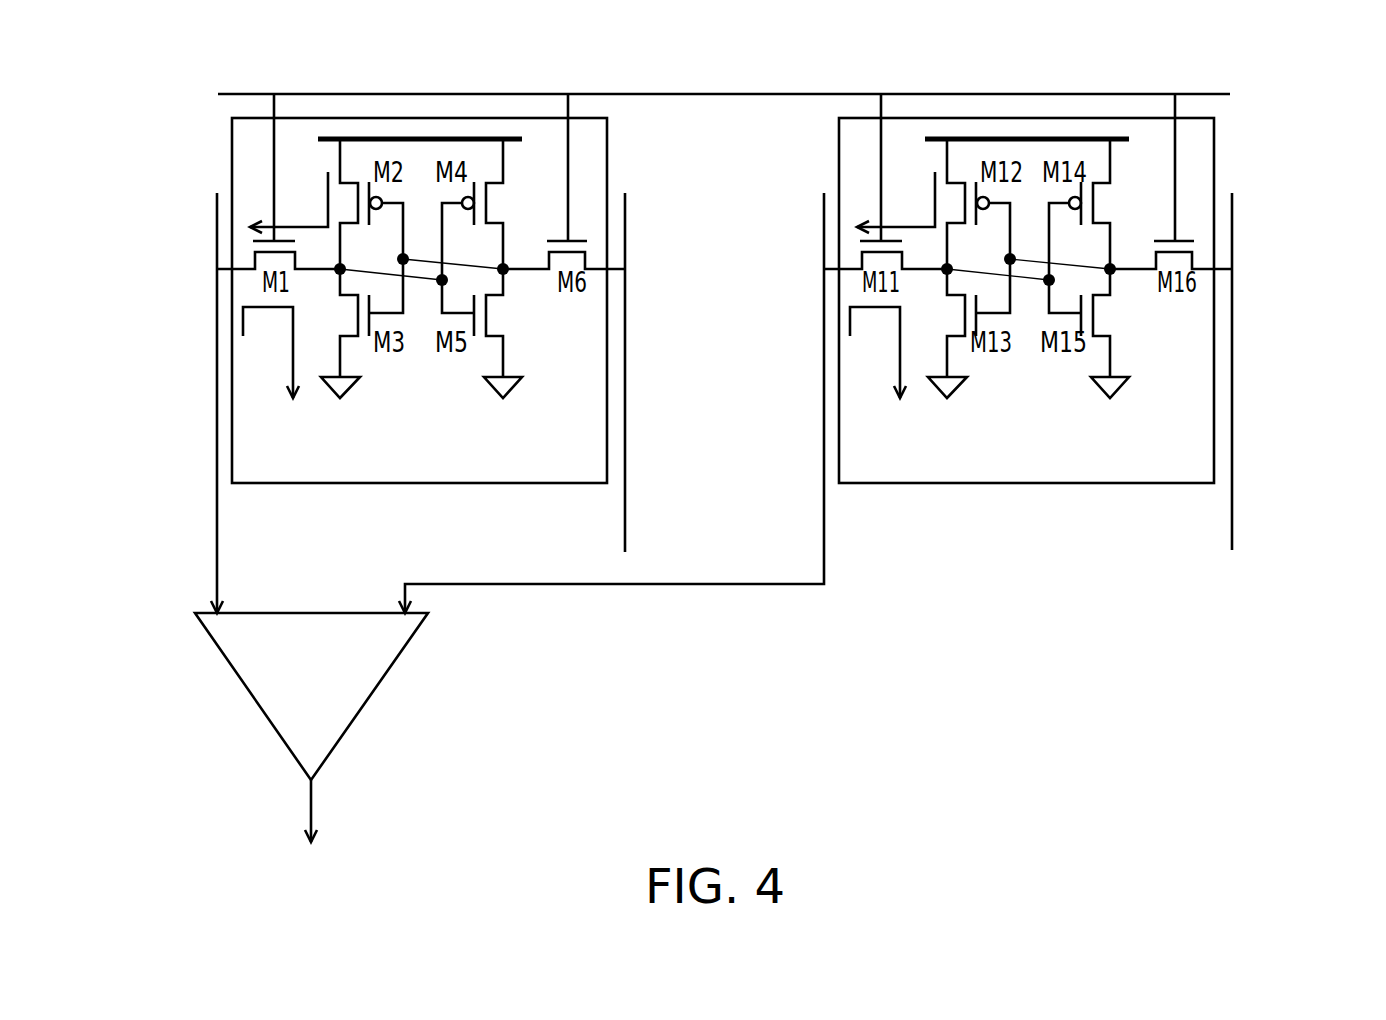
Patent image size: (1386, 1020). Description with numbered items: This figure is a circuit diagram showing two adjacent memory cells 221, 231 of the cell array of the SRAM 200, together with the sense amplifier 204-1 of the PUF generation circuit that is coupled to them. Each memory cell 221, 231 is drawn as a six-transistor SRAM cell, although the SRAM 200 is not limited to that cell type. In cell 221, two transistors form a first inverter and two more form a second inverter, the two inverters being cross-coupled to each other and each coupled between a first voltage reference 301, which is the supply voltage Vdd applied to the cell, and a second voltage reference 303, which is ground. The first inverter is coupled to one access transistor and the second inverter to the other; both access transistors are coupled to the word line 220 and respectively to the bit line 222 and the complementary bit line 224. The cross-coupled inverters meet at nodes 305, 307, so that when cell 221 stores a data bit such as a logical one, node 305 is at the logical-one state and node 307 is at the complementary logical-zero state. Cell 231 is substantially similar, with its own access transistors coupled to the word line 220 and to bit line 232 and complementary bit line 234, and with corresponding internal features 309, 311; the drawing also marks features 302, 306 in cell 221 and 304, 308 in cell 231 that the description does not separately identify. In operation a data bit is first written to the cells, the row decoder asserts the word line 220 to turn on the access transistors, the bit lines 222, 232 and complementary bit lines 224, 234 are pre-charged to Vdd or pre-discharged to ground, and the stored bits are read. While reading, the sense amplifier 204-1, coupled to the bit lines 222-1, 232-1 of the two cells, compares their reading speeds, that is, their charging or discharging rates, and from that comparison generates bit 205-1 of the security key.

The SRAM 200 is at (1316, 78).
The word line (WL) 220 is at (698, 75).
The memory cell 221 is at (556, 484).
The bit line (BL) 222 is at (216, 364).
The bit line (sense amplifier input) 222-1 is at (176, 586).
The complementary bit line (BLB) 224 is at (626, 358).
The memory cell 231 is at (1163, 484).
The bit line (BL) 232 is at (824, 364).
The bit line (sense amplifier input) 232-1 is at (443, 580).
The complementary bit line (BLB) 234 is at (1233, 358).
The sense amplifier 204-1 is at (343, 681).
The bit of the security key 205-1 is at (355, 819).
The first voltage reference 301 is at (744, 142).
The first input signal 302 is at (271, 352).
The second voltage reference 303 is at (724, 406).
The second input signal 304 is at (878, 352).
The node 305 is at (335, 273).
The first control signal 306 is at (289, 202).
The node 307 is at (508, 263).
The second control signal 308 is at (896, 202).
The third node 309 is at (978, 300).
The fourth node 311 is at (1080, 230).